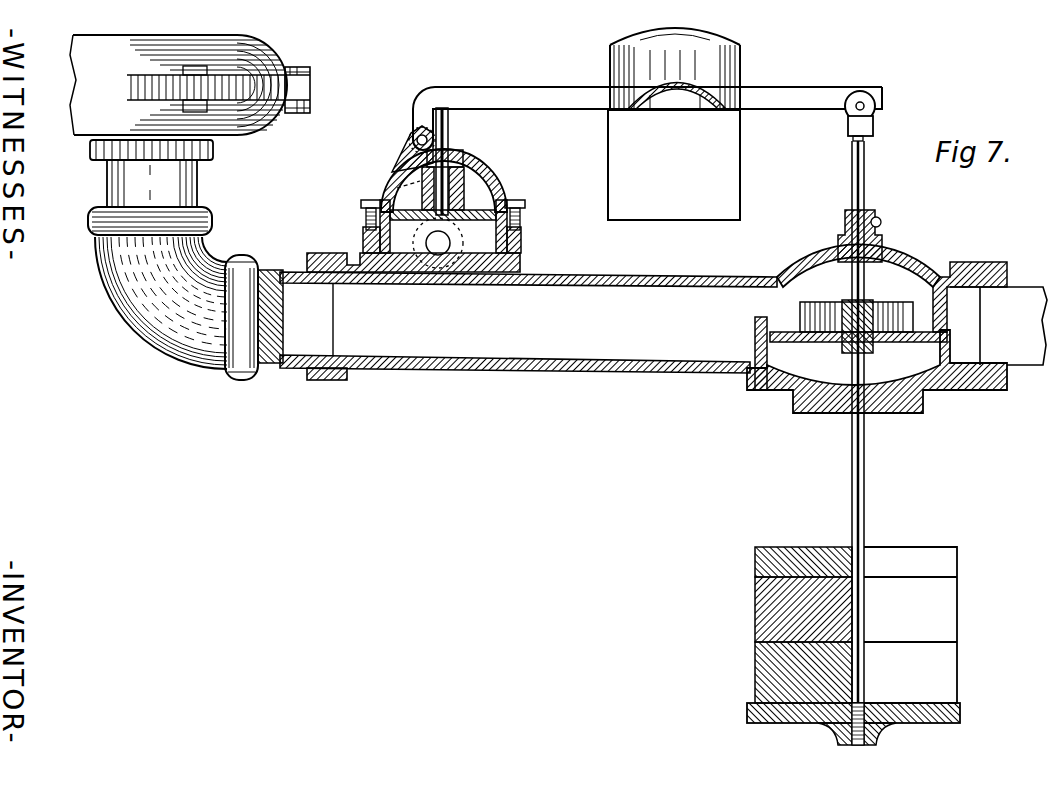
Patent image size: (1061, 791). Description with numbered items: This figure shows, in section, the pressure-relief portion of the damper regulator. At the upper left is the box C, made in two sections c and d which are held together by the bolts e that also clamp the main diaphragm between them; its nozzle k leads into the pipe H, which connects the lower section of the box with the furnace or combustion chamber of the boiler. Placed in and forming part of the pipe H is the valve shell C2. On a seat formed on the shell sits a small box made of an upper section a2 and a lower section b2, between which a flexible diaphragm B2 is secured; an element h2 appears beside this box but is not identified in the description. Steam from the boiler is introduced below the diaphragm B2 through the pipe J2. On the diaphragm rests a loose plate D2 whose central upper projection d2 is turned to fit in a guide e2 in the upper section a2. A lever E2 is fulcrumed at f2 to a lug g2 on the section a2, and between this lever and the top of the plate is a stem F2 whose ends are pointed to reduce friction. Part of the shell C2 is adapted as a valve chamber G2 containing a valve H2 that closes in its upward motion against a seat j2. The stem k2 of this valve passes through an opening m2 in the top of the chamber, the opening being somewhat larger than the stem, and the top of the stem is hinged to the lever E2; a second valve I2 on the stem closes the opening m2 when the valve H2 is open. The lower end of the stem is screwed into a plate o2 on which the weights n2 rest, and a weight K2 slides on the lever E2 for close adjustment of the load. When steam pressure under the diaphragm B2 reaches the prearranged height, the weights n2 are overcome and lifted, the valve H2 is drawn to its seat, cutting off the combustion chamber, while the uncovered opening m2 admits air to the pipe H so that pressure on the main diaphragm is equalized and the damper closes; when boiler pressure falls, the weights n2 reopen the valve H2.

The box C is at (166, 85).
The box section c is at (188, 55).
The box section d is at (166, 119).
The bolts e is at (291, 67).
The nozzle k is at (215, 152).
The pipe H is at (128, 325).
The valve shell C2 is at (523, 268).
The pipe J2 is at (417, 290).
The lever E2 is at (647, 104).
The fulcrum f2 is at (409, 122).
The lug g2 is at (410, 139).
The stem F2 is at (449, 143).
The central upper projection d2 is at (484, 160).
The upper section a2 is at (503, 183).
The guide e2 is at (387, 178).
The lower section b2 is at (366, 240).
The bolt h2 is at (528, 220).
The flexible diaphragm B2 is at (402, 224).
The loose plate D2 is at (472, 221).
The weight K2 is at (674, 124).
The valve stem k2 is at (865, 185).
The valve I2 is at (880, 233).
The opening m2 is at (886, 252).
The valve H2 is at (856, 315).
The seat j2 is at (954, 323).
The valve chamber G2 is at (877, 365).
The weights n2 is at (856, 625).
The plate o2 is at (895, 704).